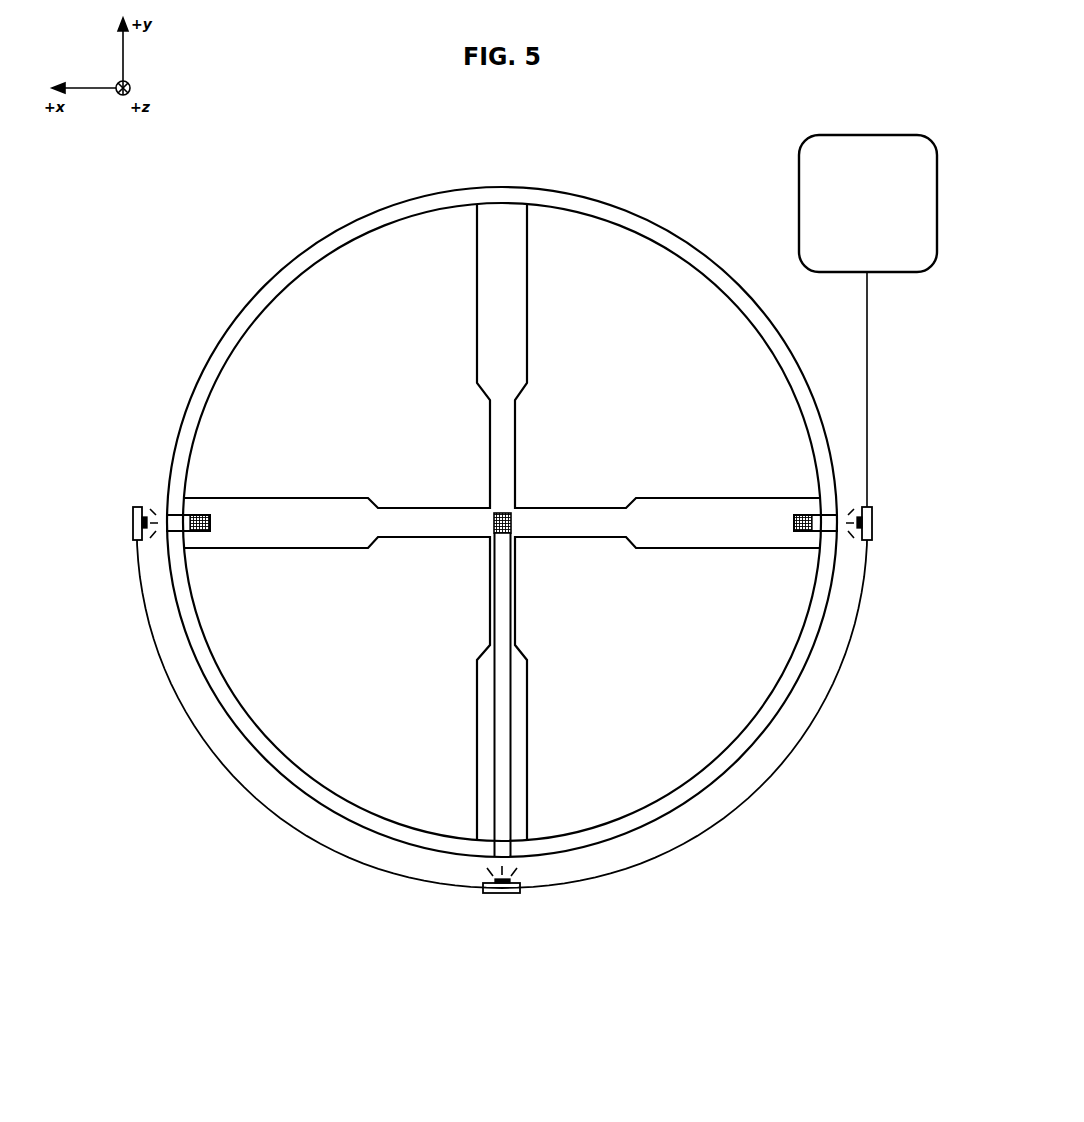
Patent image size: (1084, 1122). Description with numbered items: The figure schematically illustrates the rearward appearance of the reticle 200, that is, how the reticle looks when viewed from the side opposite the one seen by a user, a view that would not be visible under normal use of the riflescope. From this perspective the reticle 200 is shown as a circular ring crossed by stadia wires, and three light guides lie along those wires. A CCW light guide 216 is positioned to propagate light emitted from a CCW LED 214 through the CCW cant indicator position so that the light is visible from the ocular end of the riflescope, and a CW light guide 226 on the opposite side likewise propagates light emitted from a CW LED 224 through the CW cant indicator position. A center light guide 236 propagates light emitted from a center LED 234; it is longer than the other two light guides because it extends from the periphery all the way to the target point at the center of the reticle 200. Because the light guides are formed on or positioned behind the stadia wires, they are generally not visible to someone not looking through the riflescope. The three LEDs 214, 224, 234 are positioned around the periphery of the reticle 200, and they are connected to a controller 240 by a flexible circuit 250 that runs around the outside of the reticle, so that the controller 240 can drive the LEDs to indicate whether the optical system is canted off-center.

The reticle 200 is at (277, 292).
The CW light guide 226 is at (183, 521).
The CCW light guide 216 is at (821, 521).
The center light guide 236 is at (502, 750).
The controller 240 is at (868, 321).
The flexible circuit 250 is at (262, 810).
The CW LED 224 is at (133, 524).
The CCW LED 214 is at (872, 524).
The center LED 234 is at (503, 893).